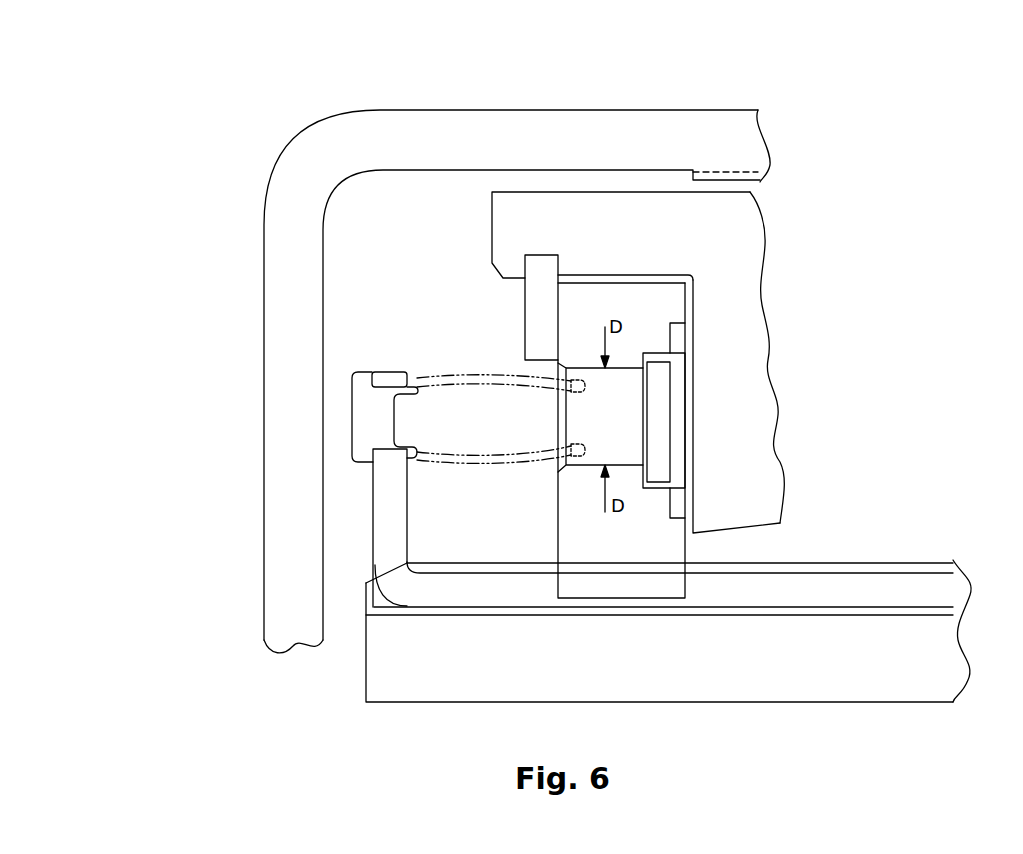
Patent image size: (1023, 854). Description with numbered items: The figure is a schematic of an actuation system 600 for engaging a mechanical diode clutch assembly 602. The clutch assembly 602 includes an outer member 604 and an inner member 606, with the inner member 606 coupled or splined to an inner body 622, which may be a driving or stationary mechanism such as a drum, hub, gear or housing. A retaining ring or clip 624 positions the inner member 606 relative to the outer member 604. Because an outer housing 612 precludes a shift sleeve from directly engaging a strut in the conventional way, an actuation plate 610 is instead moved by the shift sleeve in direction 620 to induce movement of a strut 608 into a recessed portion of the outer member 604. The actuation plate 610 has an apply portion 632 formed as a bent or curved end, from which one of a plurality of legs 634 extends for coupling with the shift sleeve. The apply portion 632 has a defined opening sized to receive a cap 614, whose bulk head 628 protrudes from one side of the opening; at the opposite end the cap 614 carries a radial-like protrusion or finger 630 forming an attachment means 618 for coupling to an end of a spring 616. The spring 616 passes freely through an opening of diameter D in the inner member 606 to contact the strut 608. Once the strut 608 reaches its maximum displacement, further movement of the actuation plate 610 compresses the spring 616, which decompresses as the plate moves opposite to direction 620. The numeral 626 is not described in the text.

The actuation system 600 is at (207, 246).
The mechanical diode clutch assembly 602 is at (858, 239).
The outer member 604 is at (606, 215).
The inner member 606 is at (612, 535).
The strut 608 is at (662, 402).
The actuation plate 610 is at (385, 532).
The outer housing 612 is at (410, 128).
The cap 614 is at (363, 398).
The spring 616 is at (447, 373).
The attachment means 618 is at (413, 462).
The direction 620 is at (194, 418).
The inner body 622 is at (857, 663).
The retaining ring or clip 624 is at (533, 303).
The bottom arm 626 is at (372, 467).
The bulk head 628 is at (352, 423).
The radial-like protrusion or finger 630 is at (420, 390).
The apply portion 632 is at (417, 526).
The leg 634 is at (480, 598).